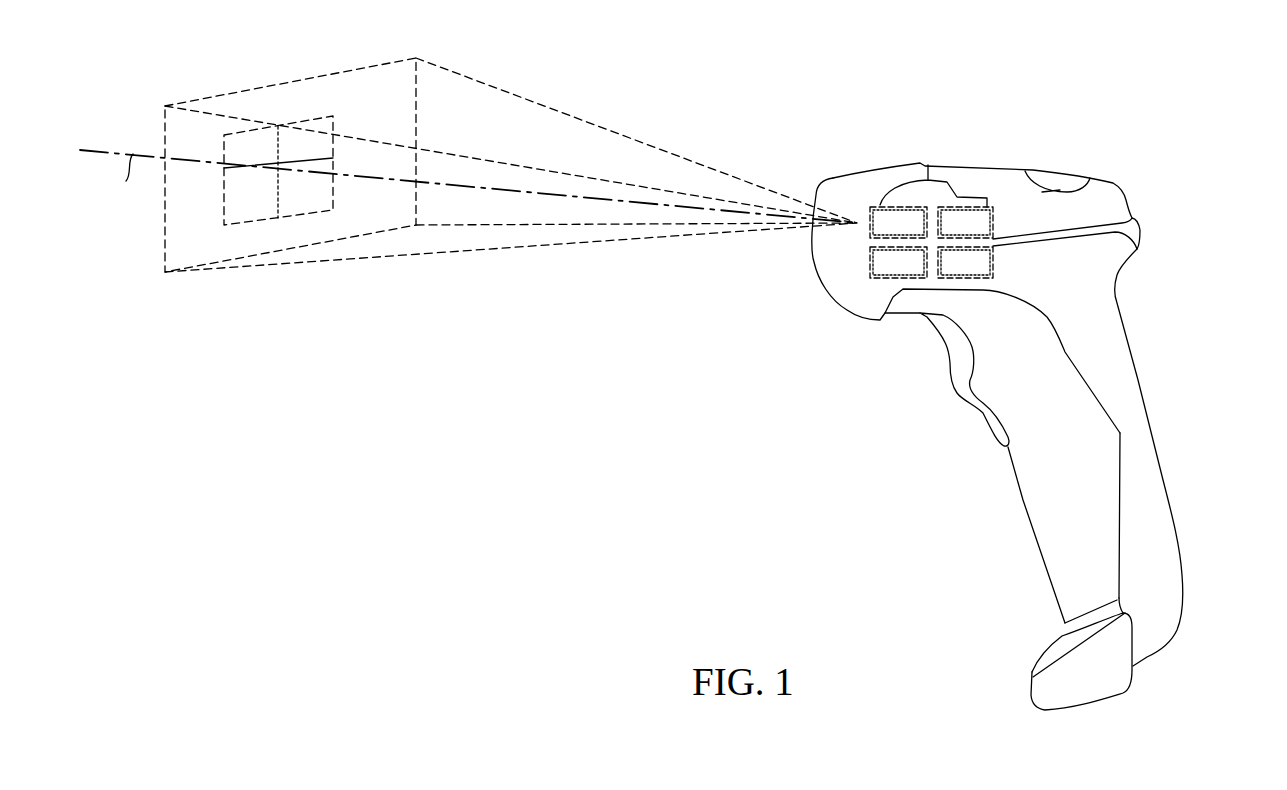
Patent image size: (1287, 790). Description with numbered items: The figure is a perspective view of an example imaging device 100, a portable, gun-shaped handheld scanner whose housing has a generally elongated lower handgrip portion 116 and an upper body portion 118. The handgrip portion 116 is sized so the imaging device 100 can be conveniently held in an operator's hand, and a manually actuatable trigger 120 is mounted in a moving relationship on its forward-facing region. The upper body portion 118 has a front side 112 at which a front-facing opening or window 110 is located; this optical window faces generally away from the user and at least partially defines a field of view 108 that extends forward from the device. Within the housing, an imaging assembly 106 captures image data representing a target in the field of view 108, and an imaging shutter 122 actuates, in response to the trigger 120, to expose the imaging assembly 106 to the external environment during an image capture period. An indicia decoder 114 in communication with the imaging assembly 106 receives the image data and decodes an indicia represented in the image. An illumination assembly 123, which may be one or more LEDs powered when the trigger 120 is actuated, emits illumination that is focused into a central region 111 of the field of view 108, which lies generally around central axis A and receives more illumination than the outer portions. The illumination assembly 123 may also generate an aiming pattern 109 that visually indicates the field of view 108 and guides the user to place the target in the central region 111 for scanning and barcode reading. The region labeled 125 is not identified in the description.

The imaging device 100 is at (1176, 64).
The imaging assembly 106 is at (898, 222).
The field of view 108 is at (468, 165).
The aiming pattern 109 is at (230, 176).
The front-facing opening or window 110 is at (969, 239).
The central region 111 is at (223, 140).
The front side 112 is at (778, 379).
The indicia decoder 114 is at (965, 222).
The handgrip portion 116 is at (1152, 423).
The upper body portion 118 is at (1118, 192).
The trigger 120 is at (956, 387).
The imaging shutter 122 is at (898, 262).
The illumination assembly 123 is at (965, 262).
The base portion 125 is at (941, 529).